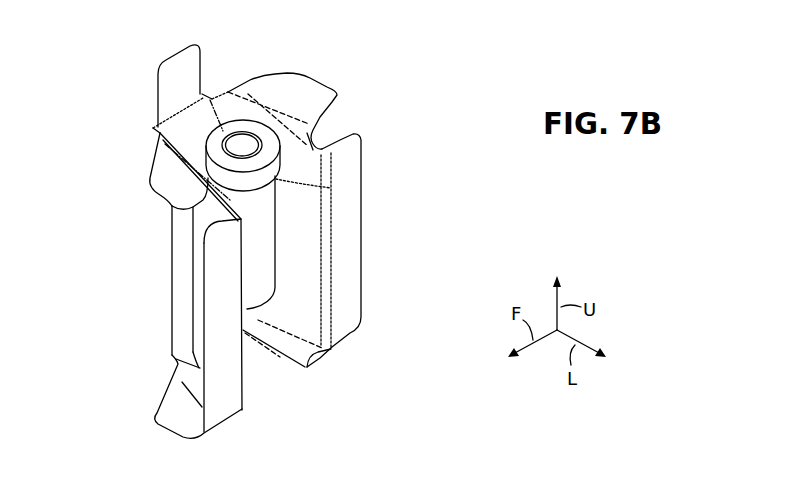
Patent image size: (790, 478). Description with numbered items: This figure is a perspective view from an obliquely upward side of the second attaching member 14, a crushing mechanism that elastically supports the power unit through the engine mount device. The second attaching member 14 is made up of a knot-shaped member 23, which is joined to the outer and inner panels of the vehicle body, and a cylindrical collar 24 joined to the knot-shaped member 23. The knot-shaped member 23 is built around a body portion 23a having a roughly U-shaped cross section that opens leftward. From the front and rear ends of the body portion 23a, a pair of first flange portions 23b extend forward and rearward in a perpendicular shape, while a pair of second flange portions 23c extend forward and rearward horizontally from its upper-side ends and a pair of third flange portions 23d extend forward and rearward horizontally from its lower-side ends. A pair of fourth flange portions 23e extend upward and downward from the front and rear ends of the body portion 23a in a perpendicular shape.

The second attaching member 14 is at (366, 105).
The knot-shaped member 23 is at (146, 127).
The body portion 23a is at (177, 258).
The first flange portions 23b is at (215, 302).
The second flange portions 23c is at (318, 90).
The third flange portions 23d is at (168, 415).
The fourth flange portions 23e is at (175, 60).
The cylindrical collar 24 is at (262, 272).